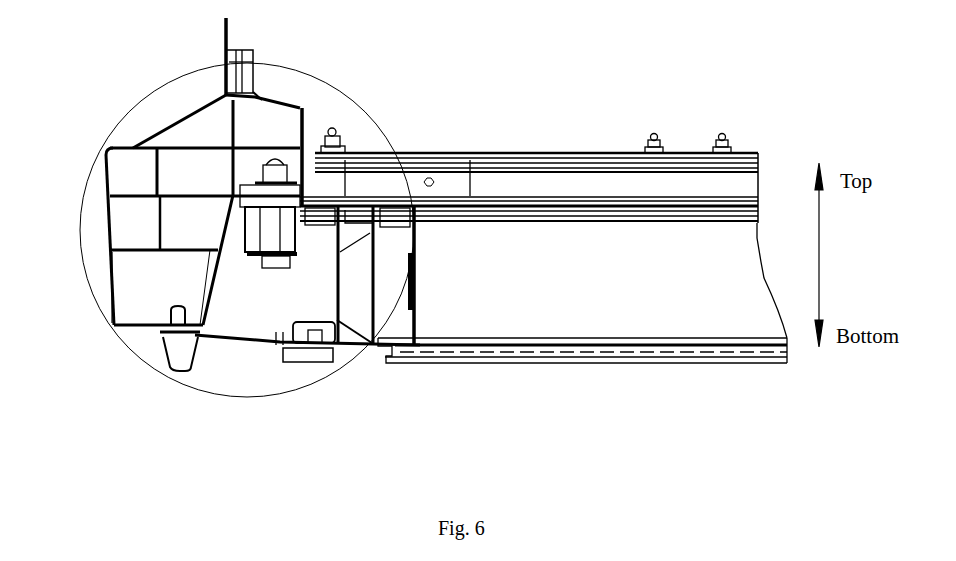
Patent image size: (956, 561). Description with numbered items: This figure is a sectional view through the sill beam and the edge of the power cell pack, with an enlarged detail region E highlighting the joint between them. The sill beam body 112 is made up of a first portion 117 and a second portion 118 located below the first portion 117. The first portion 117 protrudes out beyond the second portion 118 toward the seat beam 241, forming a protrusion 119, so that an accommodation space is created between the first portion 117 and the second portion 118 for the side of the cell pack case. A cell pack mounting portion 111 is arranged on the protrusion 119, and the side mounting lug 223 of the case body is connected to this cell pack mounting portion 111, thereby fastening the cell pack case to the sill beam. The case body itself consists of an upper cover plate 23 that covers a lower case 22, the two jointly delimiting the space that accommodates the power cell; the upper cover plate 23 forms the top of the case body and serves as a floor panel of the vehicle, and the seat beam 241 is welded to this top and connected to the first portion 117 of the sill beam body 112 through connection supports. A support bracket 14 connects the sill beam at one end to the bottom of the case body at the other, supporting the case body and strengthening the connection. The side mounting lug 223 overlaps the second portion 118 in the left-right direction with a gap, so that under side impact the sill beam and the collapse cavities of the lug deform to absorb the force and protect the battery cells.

The enlarged detail region E is at (189, 70).
The sill beam body 112 is at (163, 98).
The first portion 117 is at (133, 145).
The second portion 118 is at (104, 240).
The protrusion 119 is at (262, 98).
The side mounting lug 223 is at (247, 270).
The cell pack mounting portion 111 is at (333, 127).
The upper cover plate 23 is at (444, 212).
The seat beam 241 is at (600, 153).
The support bracket 14 is at (245, 353).
The lower case 22 is at (388, 350).